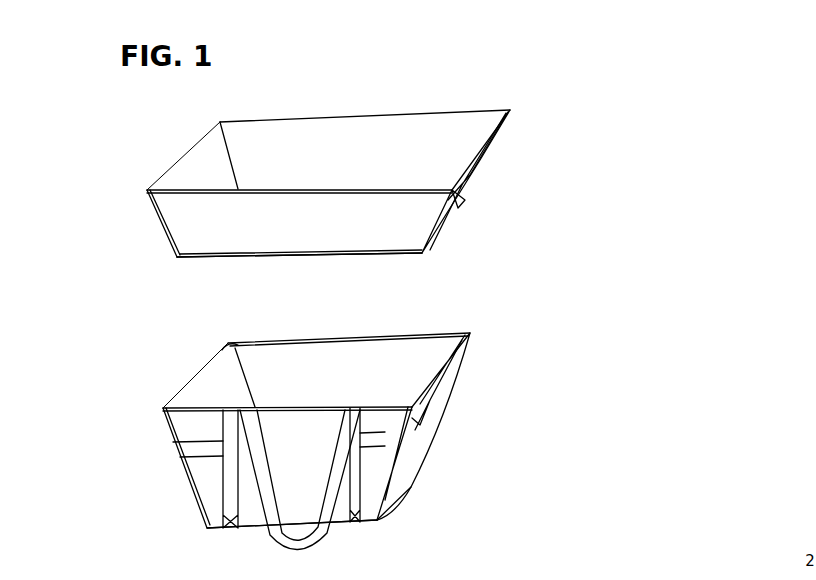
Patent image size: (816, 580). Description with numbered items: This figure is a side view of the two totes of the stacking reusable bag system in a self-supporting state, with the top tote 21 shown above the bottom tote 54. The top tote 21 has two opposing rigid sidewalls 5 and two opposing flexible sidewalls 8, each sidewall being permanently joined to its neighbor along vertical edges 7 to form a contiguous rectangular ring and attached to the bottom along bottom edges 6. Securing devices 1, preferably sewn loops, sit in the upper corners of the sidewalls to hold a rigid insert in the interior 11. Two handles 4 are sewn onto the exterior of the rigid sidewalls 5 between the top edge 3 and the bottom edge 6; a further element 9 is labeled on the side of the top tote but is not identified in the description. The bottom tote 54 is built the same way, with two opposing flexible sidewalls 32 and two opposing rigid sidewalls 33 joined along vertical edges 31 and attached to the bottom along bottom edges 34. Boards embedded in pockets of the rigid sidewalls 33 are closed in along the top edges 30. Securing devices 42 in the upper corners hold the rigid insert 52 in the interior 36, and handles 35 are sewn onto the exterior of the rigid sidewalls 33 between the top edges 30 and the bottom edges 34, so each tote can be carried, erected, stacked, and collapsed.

The securing devices 1 is at (222, 121).
The interior 11 is at (333, 143).
The top edge 3 is at (510, 110).
The handles 4 is at (477, 172).
The rigid sidewalls 5 is at (455, 202).
The vertical edges 7 is at (148, 199).
The side panel 9 is at (255, 172).
The flexible sidewalls 8 is at (187, 220).
The bottom edges 6 is at (197, 253).
The top tote 21 is at (698, 127).
The interior 36 is at (380, 350).
The securing devices 42 is at (222, 352).
The top edges 30 is at (163, 409).
The vertical edges 31 is at (168, 433).
The rigid sidewalls 33 is at (212, 478).
The rigid insert 52 is at (425, 417).
The flexible sidewalls 32 is at (412, 445).
The bottom edges 34 is at (400, 492).
The handles 35 is at (325, 530).
The bottom tote 54 is at (638, 382).